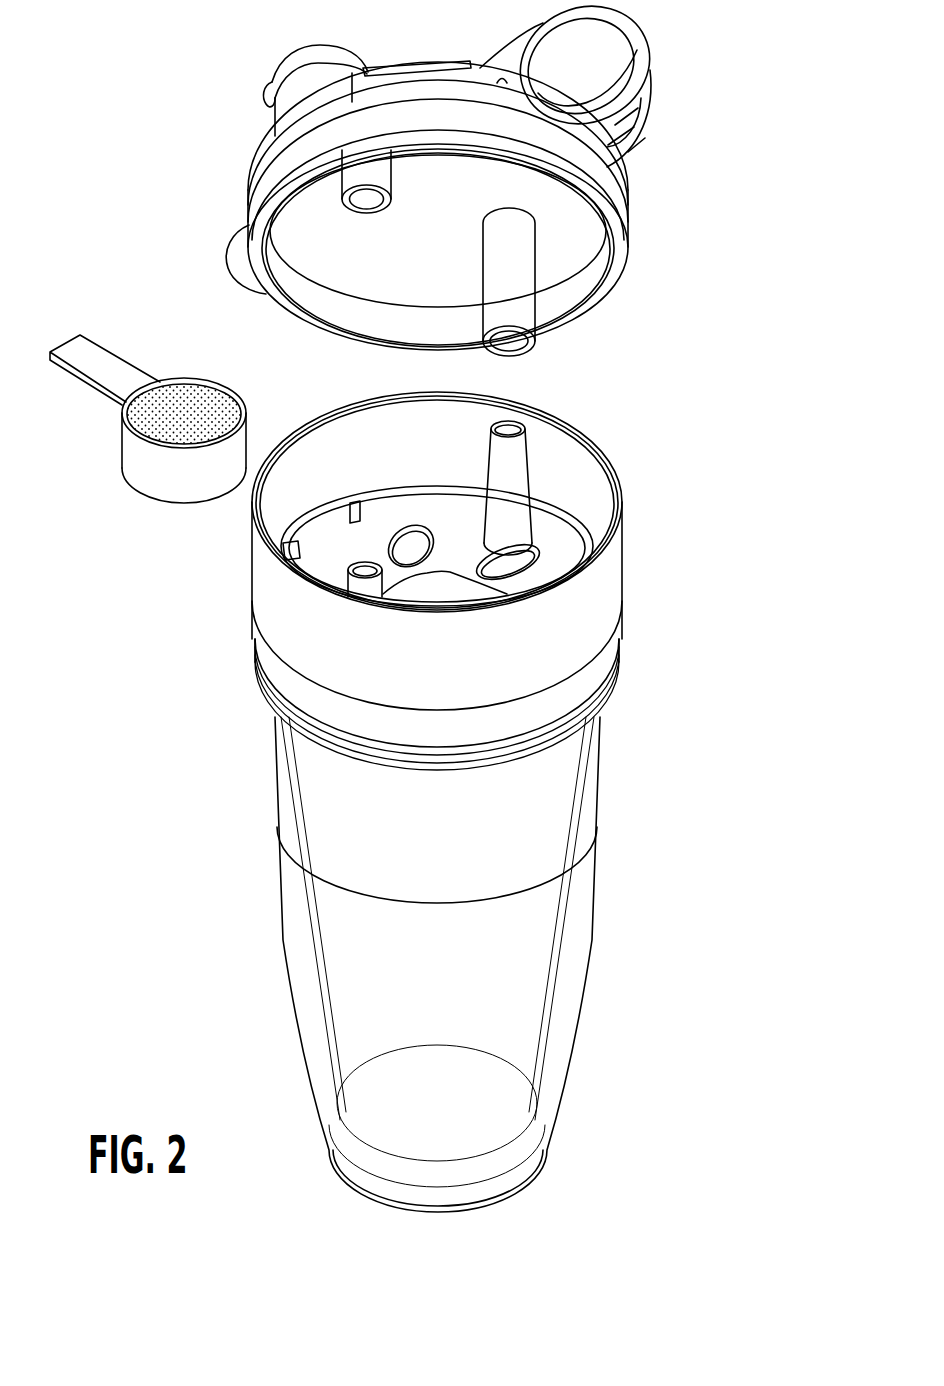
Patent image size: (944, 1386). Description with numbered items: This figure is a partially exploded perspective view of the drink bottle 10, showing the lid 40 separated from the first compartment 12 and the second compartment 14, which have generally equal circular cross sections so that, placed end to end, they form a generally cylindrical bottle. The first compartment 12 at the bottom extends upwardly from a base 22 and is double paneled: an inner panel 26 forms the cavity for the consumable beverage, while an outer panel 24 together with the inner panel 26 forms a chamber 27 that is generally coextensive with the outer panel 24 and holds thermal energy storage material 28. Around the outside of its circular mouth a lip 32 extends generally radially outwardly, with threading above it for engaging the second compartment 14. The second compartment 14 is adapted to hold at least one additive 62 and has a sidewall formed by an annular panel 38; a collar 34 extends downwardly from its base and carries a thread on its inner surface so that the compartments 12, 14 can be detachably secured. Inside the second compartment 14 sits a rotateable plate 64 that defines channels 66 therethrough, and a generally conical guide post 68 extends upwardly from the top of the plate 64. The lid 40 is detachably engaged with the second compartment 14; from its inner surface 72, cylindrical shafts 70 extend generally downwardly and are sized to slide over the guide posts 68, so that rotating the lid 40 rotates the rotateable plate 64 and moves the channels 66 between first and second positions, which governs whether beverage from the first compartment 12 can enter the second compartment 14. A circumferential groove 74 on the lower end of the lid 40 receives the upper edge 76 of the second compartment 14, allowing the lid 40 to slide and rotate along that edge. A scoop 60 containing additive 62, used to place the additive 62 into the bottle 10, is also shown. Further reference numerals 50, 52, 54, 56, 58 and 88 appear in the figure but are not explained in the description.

The drink bottle 10 is at (218, 681).
The first compartment 12 is at (624, 861).
The second compartment 14 is at (688, 657).
The base 22 is at (464, 1214).
The outer panel 24 is at (592, 950).
The inner panel 26 is at (595, 907).
The chamber 27 is at (553, 1057).
The thermal energy storage material 28 is at (562, 1013).
The lip 32 is at (590, 727).
The collar 34 is at (590, 682).
The annular panel 38 is at (580, 603).
The lid 40 is at (608, 172).
The handle loop 50 is at (660, 55).
The tab 52 is at (235, 258).
The spout 54 is at (290, 93).
The spout cap 56 is at (290, 62).
The hinge 58 is at (405, 62).
The scoop 60 is at (105, 355).
The additive 62 is at (170, 428).
The rotateable plate 64 is at (553, 552).
The channels 66 is at (480, 557).
The guide post 68 is at (525, 452).
The shaft 70 is at (385, 170).
The inner surface 72 is at (622, 240).
The circumferential groove 74 is at (577, 225).
The upper edge 76 is at (612, 535).
The tabs 88 is at (345, 508).